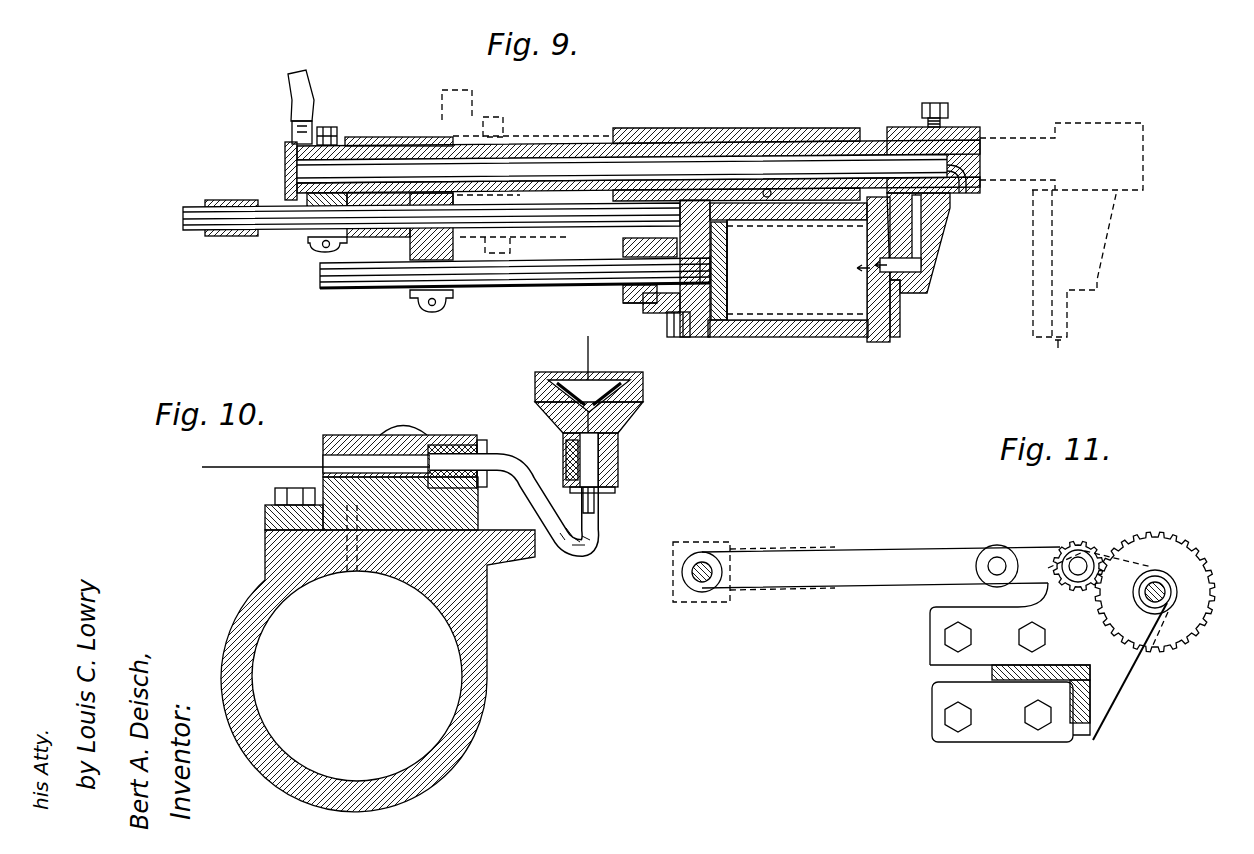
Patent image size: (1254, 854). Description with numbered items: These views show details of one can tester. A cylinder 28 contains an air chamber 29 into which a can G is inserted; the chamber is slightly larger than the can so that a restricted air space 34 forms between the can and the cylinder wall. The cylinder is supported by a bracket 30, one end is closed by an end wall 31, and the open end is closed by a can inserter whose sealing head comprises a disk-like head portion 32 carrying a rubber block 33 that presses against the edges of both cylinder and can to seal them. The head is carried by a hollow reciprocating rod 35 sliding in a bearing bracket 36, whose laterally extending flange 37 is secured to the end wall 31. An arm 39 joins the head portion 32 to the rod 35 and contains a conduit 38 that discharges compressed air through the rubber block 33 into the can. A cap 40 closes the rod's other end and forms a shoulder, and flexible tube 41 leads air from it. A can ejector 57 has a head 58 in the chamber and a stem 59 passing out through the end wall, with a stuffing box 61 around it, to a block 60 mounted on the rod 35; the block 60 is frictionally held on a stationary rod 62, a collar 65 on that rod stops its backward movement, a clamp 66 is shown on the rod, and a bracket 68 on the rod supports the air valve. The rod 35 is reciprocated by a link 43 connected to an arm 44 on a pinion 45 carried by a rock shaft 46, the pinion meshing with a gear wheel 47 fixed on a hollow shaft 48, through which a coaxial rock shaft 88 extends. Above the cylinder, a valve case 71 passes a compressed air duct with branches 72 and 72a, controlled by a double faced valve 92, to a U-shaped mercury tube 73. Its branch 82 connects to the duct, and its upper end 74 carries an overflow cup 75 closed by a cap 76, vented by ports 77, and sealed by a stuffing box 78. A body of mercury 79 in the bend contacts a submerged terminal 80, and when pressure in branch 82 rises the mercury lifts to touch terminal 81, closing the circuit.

In FIG. 9, the cylinder 28 is at (848, 337).
In FIG. 10, the cylinder 28 is at (237, 615).
In FIG. 9, the air chamber 29 is at (793, 337).
In FIG. 10, the air chamber 29 is at (357, 676).
In FIG. 9, the bracket 30 is at (640, 324).
In FIG. 11, the bracket 30 is at (1093, 704).
In FIG. 9, the end wall 31 is at (708, 333).
In FIG. 9, the disk-like head portion 32 is at (898, 342).
In FIG. 9, the rubber block 33 is at (1033, 325).
In FIG. 9, the restricted air space 34 is at (760, 337).
In FIG. 9, the reciprocating rod 35 is at (873, 138).
In FIG. 11, the reciprocating rod 35 is at (777, 593).
In FIG. 9, the bearing bracket 36 is at (807, 127).
In FIG. 9, the laterally extending flange 37 is at (687, 337).
In FIG. 9, the conduit 38 is at (921, 242).
In FIG. 9, the arm 39 is at (943, 217).
In FIG. 9, the cap 40 is at (282, 160).
In FIG. 11, the cap 40 is at (675, 597).
In FIG. 9, the flexible tube 41 is at (313, 95).
In FIG. 11, the link 43 is at (846, 558).
In FIG. 11, the arm 44 is at (1020, 557).
In FIG. 11, the pinion 45 is at (1081, 538).
In FIG. 11, the rock shaft 46 is at (1080, 565).
In FIG. 11, the gear wheel 47 is at (1167, 547).
In FIG. 11, the hollow shaft 48 is at (1150, 600).
In FIG. 9, the can ejector 57 is at (588, 288).
In FIG. 9, the head 58 is at (733, 273).
In FIG. 9, the stem 59 is at (500, 290).
In FIG. 9, the block 60 is at (418, 136).
In FIG. 9, the stuffing box 61 is at (623, 247).
In FIG. 9, the stationary rod 62 is at (487, 210).
In FIG. 9, the collar 65 is at (482, 262).
In FIG. 9, the clamp 66 is at (313, 237).
In FIG. 9, the bracket 68 is at (232, 237).
In FIG. 10, the valve case 71 is at (323, 443).
In FIG. 10, the compressed air duct 72 is at (265, 518).
In FIG. 10, the compressed air duct branch 72a is at (428, 455).
In FIG. 10, the mercury tube 73 is at (612, 508).
In FIG. 10, the upper end 74 is at (620, 455).
In FIG. 10, the overflow cup 75 is at (550, 415).
In FIG. 10, the cap 76 is at (563, 372).
In FIG. 10, the ports 77 is at (552, 402).
In FIG. 10, the stuffing box 78 is at (568, 450).
In FIG. 10, the body of mercury 79 is at (583, 550).
In FIG. 10, the terminal 80 is at (560, 548).
In FIG. 10, the terminal 81 is at (597, 513).
In FIG. 10, the branch 82 is at (523, 491).
In FIG. 9, the rock shaft 88 is at (767, 189).
In FIG. 11, the rock shaft 88 is at (1153, 608).
In FIG. 10, the double faced valve 92 is at (402, 424).
In FIG. 9, the can G is at (813, 337).